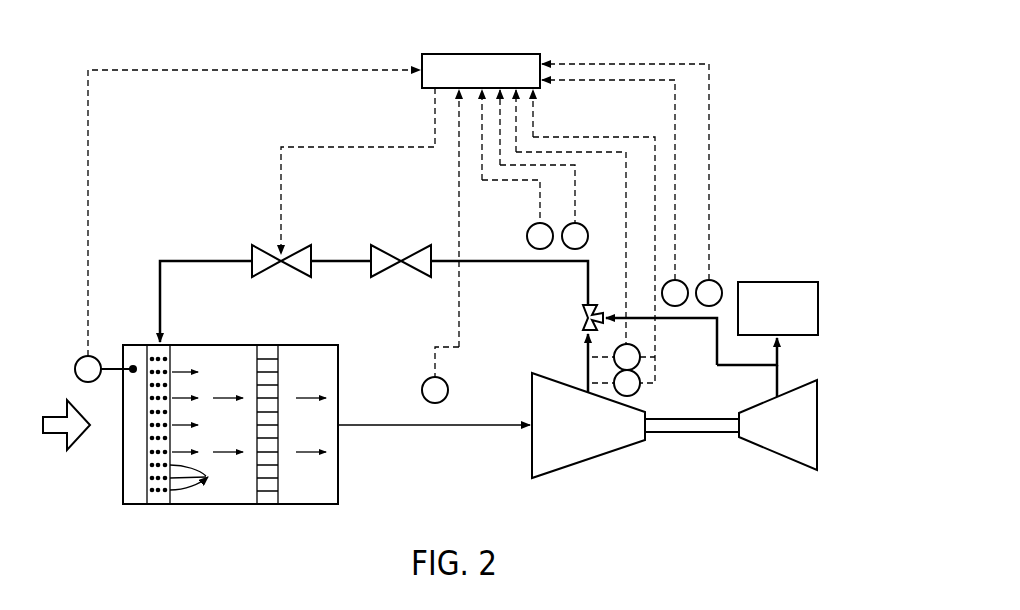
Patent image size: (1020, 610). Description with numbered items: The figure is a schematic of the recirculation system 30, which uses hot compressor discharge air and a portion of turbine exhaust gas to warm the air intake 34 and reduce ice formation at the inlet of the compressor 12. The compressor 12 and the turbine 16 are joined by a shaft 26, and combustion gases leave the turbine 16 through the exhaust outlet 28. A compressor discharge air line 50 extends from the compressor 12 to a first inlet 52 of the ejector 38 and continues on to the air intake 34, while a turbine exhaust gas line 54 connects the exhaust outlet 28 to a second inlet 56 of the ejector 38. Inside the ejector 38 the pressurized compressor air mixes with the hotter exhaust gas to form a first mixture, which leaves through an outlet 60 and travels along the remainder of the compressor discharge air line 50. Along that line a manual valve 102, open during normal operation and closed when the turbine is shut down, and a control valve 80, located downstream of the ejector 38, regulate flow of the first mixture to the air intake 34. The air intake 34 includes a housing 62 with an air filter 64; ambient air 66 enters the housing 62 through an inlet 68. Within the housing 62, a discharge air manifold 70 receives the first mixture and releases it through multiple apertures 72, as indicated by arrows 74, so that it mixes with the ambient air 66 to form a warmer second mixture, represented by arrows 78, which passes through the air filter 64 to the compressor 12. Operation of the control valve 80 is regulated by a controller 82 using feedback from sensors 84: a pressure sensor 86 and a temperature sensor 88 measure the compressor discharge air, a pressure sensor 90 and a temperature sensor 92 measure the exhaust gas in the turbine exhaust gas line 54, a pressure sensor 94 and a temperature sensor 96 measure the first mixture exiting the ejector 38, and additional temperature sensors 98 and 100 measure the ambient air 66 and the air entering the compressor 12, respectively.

The recirculation system 30 is at (769, 66).
The controller 82 is at (482, 54).
The compressor 12 is at (588, 457).
The turbine 16 is at (776, 453).
The shaft 26 is at (690, 433).
The exhaust outlet 28 is at (818, 306).
The air intake 34 is at (110, 505).
The ejector 38 is at (582, 318).
The compressor discharge air line 50 is at (490, 263).
The first inlet 52 is at (586, 330).
The turbine exhaust gas line 54 is at (748, 368).
The second inlet 56 is at (599, 311).
The outlet 60 is at (585, 309).
The housing 62 is at (133, 505).
The air filter 64 is at (280, 500).
The ambient air 66 is at (55, 433).
The inlet 68 is at (123, 457).
The discharge air manifold 70 is at (172, 500).
The apertures 72 is at (202, 477).
The arrows 74 is at (180, 397).
The arrows 78 is at (225, 400).
The control valve 80 is at (268, 270).
The sensors 84 is at (104, 352).
The pressure sensor 86 is at (640, 349).
The temperature sensor 88 is at (640, 392).
The pressure sensor 90 is at (677, 280).
The temperature sensor 92 is at (715, 281).
The pressure sensor 94 is at (530, 225).
The temperature sensor 96 is at (581, 225).
The temperature sensor 98 is at (76, 362).
The temperature sensor 100 is at (446, 397).
The manual valve 102 is at (388, 270).